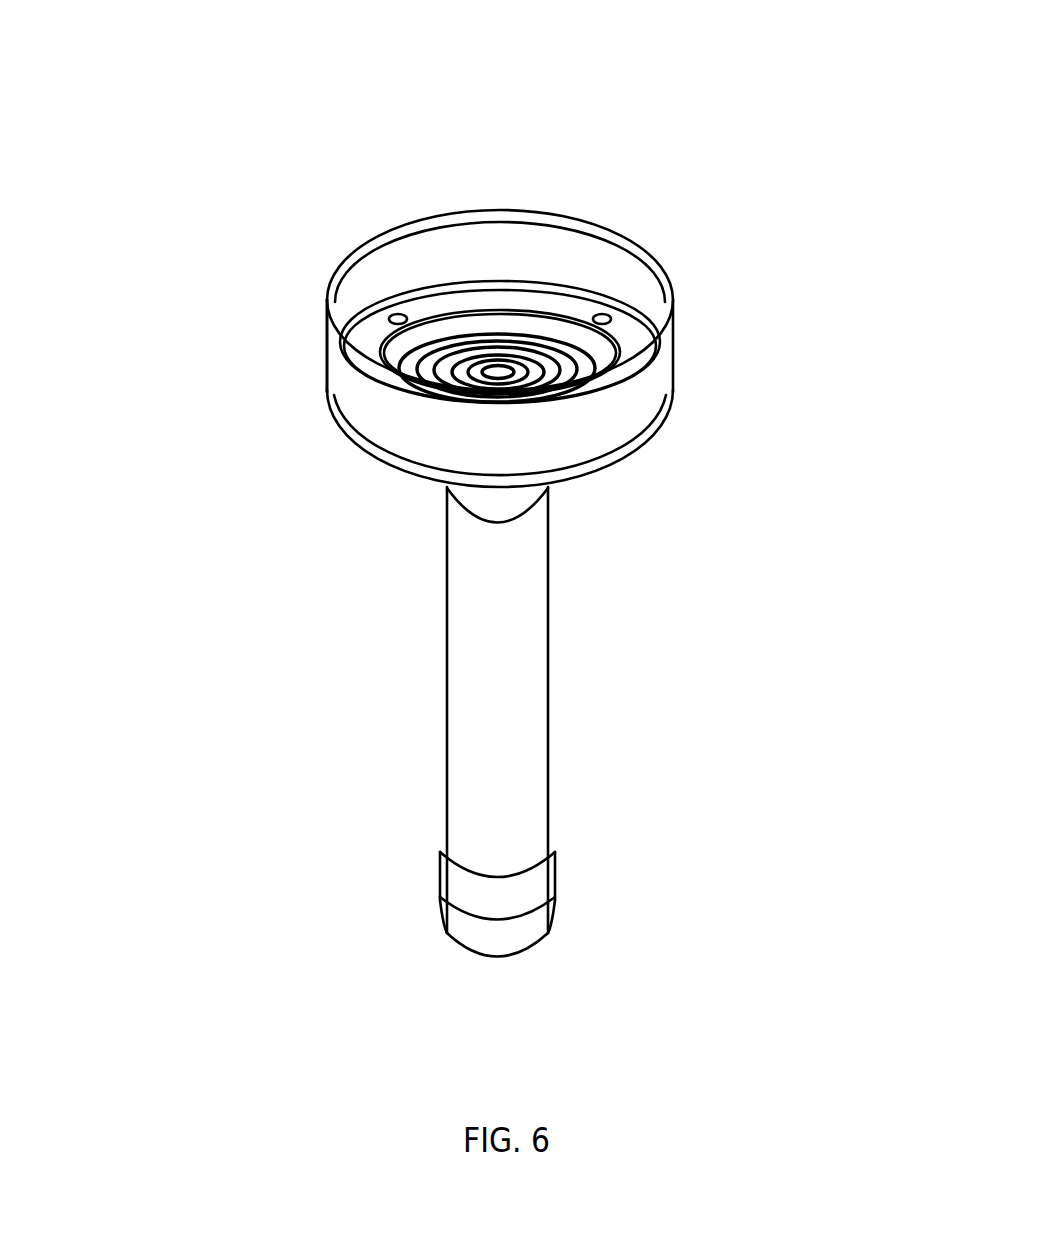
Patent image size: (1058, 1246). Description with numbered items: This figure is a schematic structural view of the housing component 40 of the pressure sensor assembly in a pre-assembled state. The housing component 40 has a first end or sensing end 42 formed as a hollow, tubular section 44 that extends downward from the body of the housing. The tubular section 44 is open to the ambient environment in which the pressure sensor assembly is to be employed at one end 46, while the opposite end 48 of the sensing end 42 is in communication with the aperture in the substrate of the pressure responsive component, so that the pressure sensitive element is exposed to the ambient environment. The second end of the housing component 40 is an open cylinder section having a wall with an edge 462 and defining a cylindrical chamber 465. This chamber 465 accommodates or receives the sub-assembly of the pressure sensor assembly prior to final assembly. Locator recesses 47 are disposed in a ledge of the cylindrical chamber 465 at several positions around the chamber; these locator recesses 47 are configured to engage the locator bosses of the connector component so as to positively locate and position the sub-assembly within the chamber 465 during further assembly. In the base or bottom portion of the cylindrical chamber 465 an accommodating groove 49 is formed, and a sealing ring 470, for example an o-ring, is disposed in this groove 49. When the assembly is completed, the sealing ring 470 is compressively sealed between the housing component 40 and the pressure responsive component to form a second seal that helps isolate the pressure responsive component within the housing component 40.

The housing component 40 is at (140, 110).
The sensing end 42 is at (398, 648).
The tubular section 44 is at (518, 682).
The end 46 is at (459, 968).
The locator recesses 47 is at (398, 319).
The opposite end 48 is at (498, 368).
The accommodating groove 49 is at (447, 364).
The edge 462 is at (327, 290).
The chamber 465 is at (548, 262).
The sealing ring 470 is at (558, 352).